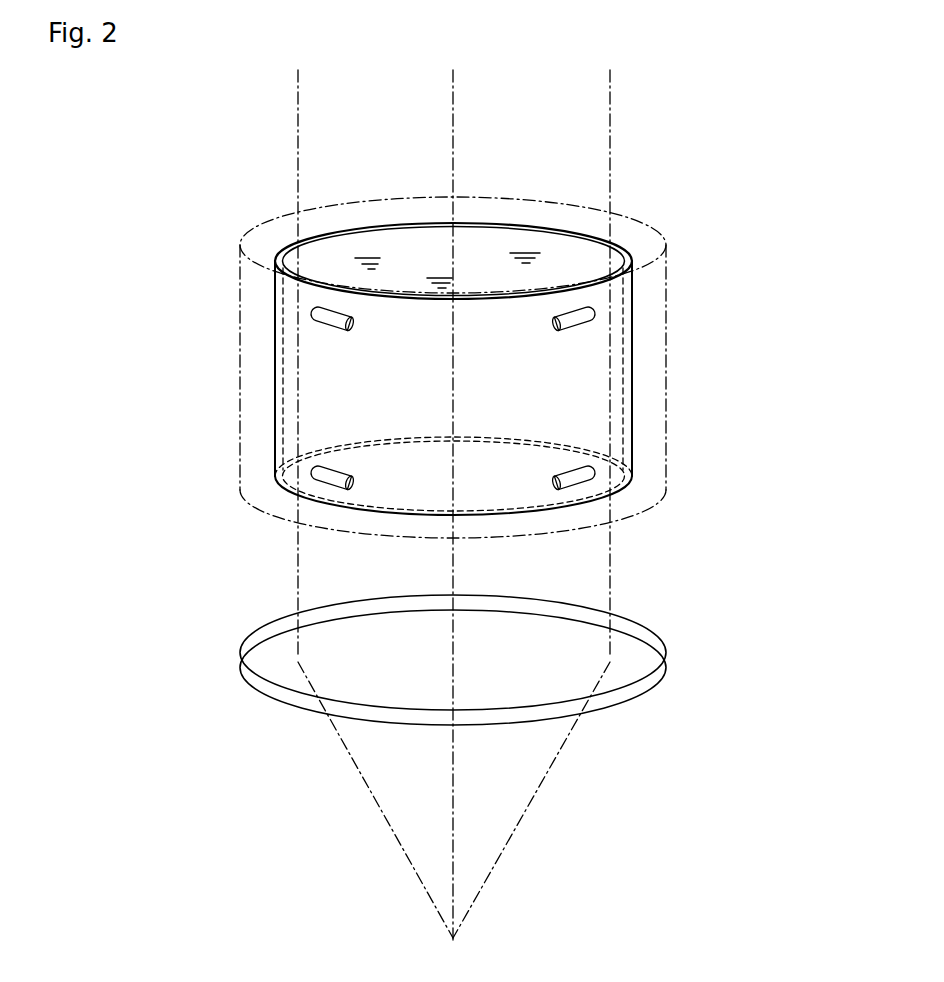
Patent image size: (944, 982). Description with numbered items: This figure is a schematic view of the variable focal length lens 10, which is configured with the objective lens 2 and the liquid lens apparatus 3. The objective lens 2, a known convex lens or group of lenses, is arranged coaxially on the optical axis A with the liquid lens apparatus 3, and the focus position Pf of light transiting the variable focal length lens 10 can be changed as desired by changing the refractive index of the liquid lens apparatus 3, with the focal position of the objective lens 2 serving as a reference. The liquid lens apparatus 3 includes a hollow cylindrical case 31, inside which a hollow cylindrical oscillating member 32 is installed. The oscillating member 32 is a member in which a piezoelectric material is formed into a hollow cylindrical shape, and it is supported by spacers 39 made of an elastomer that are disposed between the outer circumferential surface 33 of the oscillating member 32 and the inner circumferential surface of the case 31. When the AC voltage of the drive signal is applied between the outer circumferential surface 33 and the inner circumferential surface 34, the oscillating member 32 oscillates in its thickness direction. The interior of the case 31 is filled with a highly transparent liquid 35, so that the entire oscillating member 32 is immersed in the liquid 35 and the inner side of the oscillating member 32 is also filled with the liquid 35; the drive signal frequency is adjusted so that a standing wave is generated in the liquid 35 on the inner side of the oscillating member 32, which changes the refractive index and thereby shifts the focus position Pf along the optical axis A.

The variable focal length lens 10 is at (760, 128).
The objective lens 2 is at (233, 645).
The liquid lens apparatus 3 is at (420, 334).
The case 31 is at (240, 325).
The oscillating member 32 is at (277, 398).
The outer circumferential surface 33 is at (617, 247).
The inner circumferential surface 34 is at (570, 262).
The liquid 35 is at (518, 252).
The spacers 39 is at (333, 323).
The optical axis A is at (450, 122).
The focus position Pf is at (455, 936).